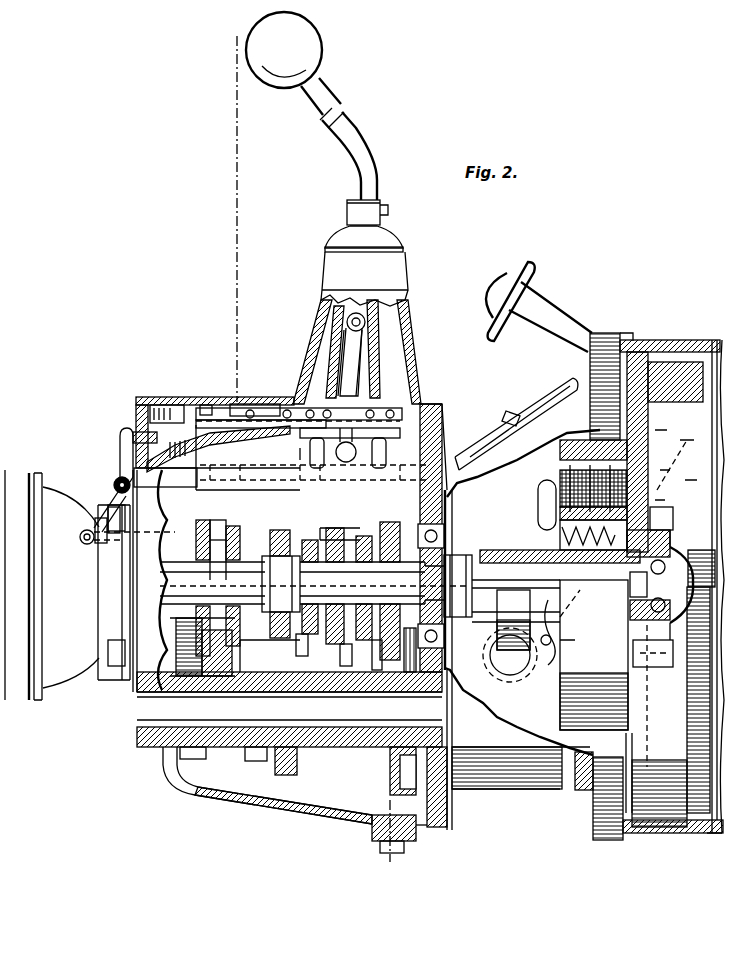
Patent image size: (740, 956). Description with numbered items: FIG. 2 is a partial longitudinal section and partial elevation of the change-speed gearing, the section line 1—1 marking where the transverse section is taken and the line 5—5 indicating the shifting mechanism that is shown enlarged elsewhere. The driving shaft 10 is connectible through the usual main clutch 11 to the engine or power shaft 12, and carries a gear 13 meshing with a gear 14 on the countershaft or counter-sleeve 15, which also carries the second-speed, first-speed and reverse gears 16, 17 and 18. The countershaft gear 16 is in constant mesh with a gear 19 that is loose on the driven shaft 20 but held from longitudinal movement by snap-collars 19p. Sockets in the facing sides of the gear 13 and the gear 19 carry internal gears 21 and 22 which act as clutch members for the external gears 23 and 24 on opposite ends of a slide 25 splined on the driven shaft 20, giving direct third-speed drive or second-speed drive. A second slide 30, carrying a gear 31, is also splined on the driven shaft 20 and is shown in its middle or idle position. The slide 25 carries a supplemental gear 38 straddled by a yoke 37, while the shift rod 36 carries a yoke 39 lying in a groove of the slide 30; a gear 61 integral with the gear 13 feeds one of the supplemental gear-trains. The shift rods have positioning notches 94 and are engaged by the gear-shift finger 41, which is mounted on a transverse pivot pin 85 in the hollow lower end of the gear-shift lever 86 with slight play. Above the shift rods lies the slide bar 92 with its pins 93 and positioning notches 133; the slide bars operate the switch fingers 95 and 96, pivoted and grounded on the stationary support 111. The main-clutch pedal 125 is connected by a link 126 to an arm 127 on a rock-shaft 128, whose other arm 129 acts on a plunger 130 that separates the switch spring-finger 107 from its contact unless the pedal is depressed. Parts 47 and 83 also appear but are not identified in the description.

The section line 1 is at (208, 31).
The section line 5 is at (5, 595).
The driving shaft 10 is at (478, 560).
The main clutch 11 is at (548, 473).
The engine shaft 12 is at (700, 540).
The gear 13 is at (444, 524).
The gear 14 is at (392, 778).
The countershaft 15 is at (346, 750).
The countershaft gear 16 is at (292, 778).
The countershaft gear 17 is at (252, 762).
The countershaft gear 18 is at (172, 772).
The gear 19 is at (286, 530).
The snap-collars 19p is at (266, 622).
The driven shaft 20 is at (190, 592).
The internal gear 21 is at (376, 532).
The internal gear 22 is at (297, 540).
The external gear 23 is at (348, 645).
The external gear 24 is at (316, 634).
The slide 25 is at (369, 658).
The second slide 30 is at (225, 532).
The gear 31 is at (140, 690).
The shift rod 36 is at (312, 452).
The yoke 37 is at (340, 512).
The supplemental gear 38 is at (282, 658).
The yoke 39 is at (200, 522).
The gear-shift finger 41 is at (364, 372).
The lug 47 is at (198, 758).
The gear 61 is at (405, 650).
The shifter rail cap 83 is at (261, 430).
The transverse pivot pin 85 is at (362, 324).
The gear-shift lever 86 is at (356, 160).
The slide bar 92 is at (398, 412).
The pins 93 is at (400, 421).
The positioning notches 94 is at (407, 451).
The switch finger 95 is at (247, 394).
The switch finger 96 is at (192, 398).
The switch spring-finger 107 is at (162, 398).
The stationary support 111 is at (208, 405).
The main-clutch pedal 125 is at (575, 325).
The link 126 is at (108, 553).
The arm 127 is at (99, 511).
The rock-shaft 128 is at (116, 482).
The arm 129 is at (120, 440).
The plunger 130 is at (140, 432).
The positioning notches 133 is at (256, 405).